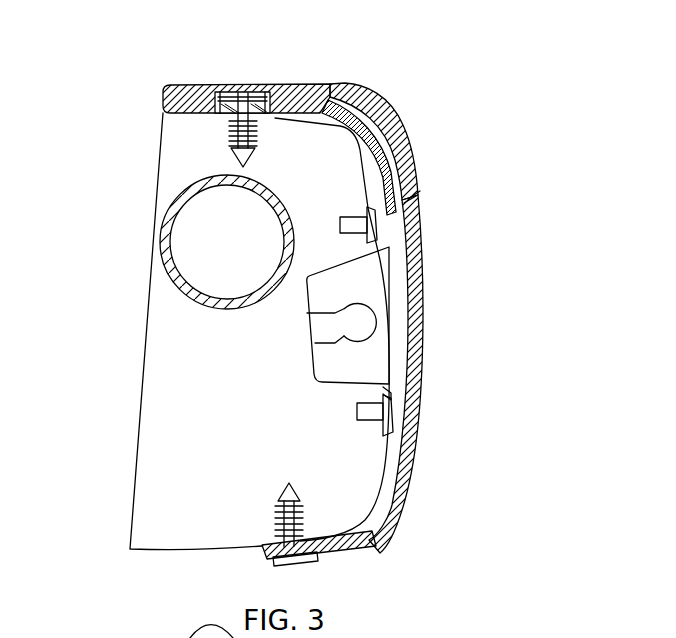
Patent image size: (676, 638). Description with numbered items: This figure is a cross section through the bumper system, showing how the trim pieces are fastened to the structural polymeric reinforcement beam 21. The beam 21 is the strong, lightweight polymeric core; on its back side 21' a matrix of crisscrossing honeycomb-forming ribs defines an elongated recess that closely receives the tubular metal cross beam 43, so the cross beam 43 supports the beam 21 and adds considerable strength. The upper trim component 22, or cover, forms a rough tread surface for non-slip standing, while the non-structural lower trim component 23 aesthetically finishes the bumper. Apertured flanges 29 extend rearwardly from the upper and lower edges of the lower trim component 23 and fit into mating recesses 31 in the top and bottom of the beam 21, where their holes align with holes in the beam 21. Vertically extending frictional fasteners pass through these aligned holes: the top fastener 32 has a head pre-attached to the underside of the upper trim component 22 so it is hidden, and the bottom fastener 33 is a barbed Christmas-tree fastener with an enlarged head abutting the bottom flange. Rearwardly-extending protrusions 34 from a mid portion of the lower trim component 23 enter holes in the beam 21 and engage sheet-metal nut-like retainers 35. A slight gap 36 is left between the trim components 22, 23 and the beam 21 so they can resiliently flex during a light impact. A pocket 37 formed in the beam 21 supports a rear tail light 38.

The structural polymeric reinforcement beam 21 is at (148, 331).
The back side of the beam 21' is at (242, 329).
The upper trim component 22 is at (400, 114).
The lower trim component 23 is at (423, 311).
The apertured flange 29 is at (276, 92).
The mating recess 31 is at (213, 117).
The top frictional fastener 32 is at (223, 152).
The bottom frictional fastener 33 is at (277, 518).
The rearwardly-extending protrusion 34 is at (338, 224).
The sheet-metal nut-like retainer 35 is at (418, 193).
The gap 36 is at (377, 177).
The pocket 37 is at (325, 300).
The rear tail light 38 is at (323, 328).
The tubular metal cross beam 43 is at (184, 291).